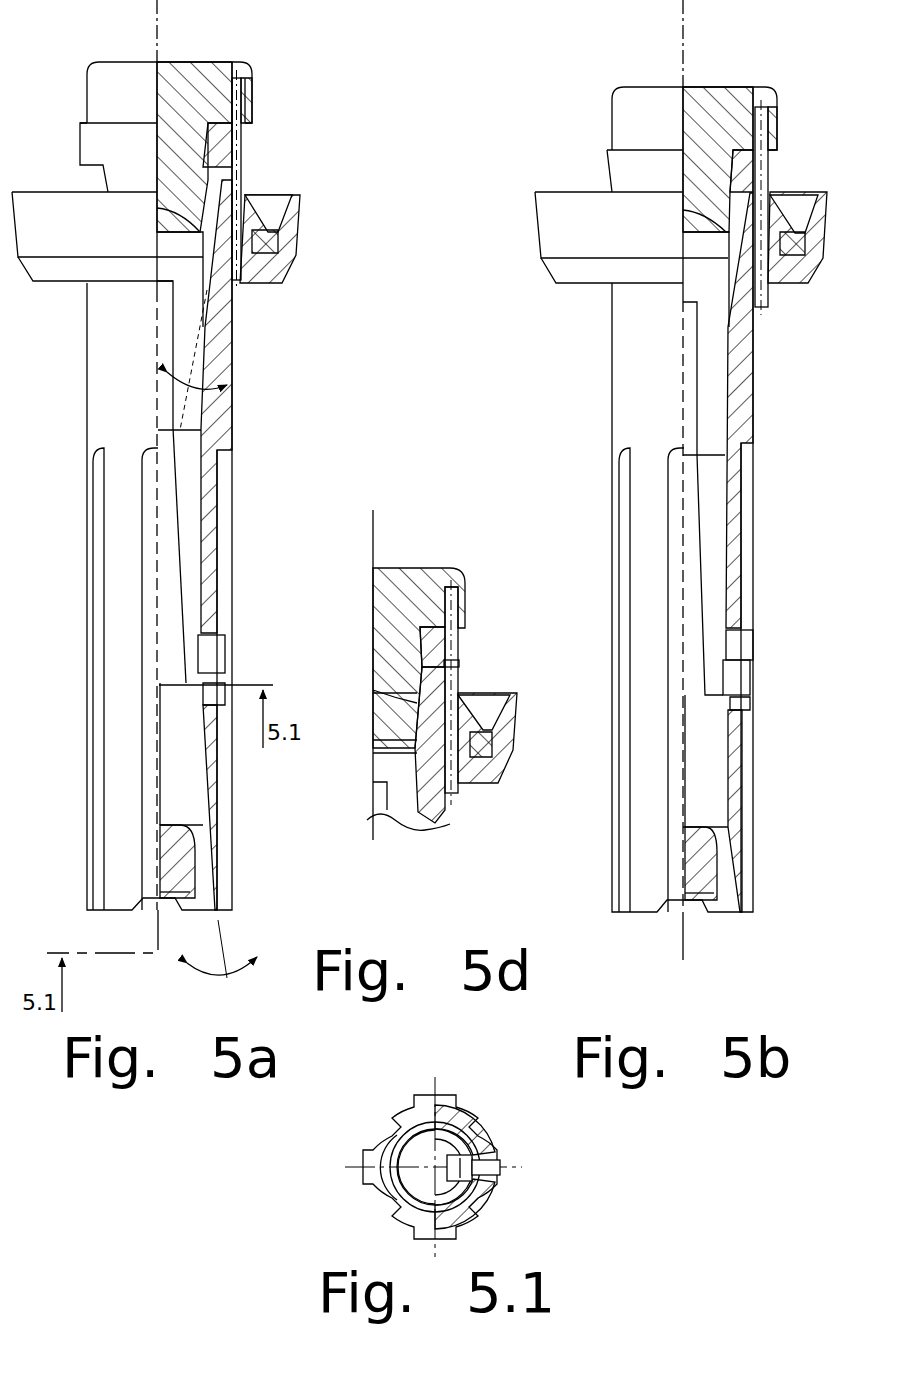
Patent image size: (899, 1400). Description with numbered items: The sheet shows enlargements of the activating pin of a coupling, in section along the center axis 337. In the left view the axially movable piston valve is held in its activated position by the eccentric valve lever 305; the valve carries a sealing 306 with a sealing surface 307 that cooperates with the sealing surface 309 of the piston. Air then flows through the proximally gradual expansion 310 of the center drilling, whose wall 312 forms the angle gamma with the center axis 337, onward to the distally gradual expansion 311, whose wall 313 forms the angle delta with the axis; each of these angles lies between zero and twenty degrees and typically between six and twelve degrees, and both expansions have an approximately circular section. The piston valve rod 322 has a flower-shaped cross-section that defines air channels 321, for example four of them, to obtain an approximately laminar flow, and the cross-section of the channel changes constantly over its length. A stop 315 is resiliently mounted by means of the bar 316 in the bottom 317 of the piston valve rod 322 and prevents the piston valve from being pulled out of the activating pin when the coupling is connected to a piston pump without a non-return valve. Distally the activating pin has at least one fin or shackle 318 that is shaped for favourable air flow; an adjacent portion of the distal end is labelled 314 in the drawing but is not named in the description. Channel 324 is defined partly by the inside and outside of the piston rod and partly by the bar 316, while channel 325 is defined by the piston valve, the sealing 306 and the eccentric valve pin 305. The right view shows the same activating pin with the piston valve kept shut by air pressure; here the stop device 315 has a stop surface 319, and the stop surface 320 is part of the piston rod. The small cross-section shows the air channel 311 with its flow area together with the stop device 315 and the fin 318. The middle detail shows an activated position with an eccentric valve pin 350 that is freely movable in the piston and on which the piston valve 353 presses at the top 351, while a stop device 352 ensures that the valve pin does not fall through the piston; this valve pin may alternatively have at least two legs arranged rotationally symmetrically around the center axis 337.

In FIG. 5A, the eccentric valve lever 305 is at (253, 283).
In FIG. 5A, the sealing 306 is at (222, 147).
In FIG. 5A, the sealing surface 307 is at (223, 172).
In FIG. 5A, the sealing surface 309 is at (225, 183).
In FIG. 5A, the proximally gradual expansion 310 is at (208, 210).
In FIG. 5A, the distally gradual expansion 311 is at (200, 880).
In FIG. 5.1, the distally gradual expansion 311 is at (445, 1122).
In FIG. 5A, the wall 312 is at (203, 240).
In FIG. 5A, the wall 313 is at (212, 823).
In FIG. 5A, the sleeve wall 314 is at (205, 777).
In FIG. 5A, the stop 315 is at (210, 657).
In FIG. 5.1, the stop 315 is at (500, 1170).
In FIG. 5A, the bar 316 is at (188, 603).
In FIG. 5A, the bottom 317 is at (190, 435).
In FIG. 5A, the fin 318 is at (170, 860).
In FIG. 5.1, the fin 318 is at (425, 1118).
In FIG. 5B, the stop surface 319 is at (742, 657).
In FIG. 5B, the stop surface 320 is at (738, 635).
In FIG. 5A, the air channels 321 is at (168, 360).
In FIG. 5A, the piston valve rod 322 is at (183, 313).
In FIG. 5A, the channel 324 is at (167, 553).
In FIG. 5A, the channel 325 is at (210, 188).
In FIG. 5A, the center axis 337 is at (157, 28).
In FIG. 5D, the eccentric valve pin 350 is at (453, 647).
In FIG. 5D, the top 351 is at (462, 580).
In FIG. 5D, the stop device 352 is at (462, 663).
In FIG. 5D, the piston valve 353 is at (422, 578).